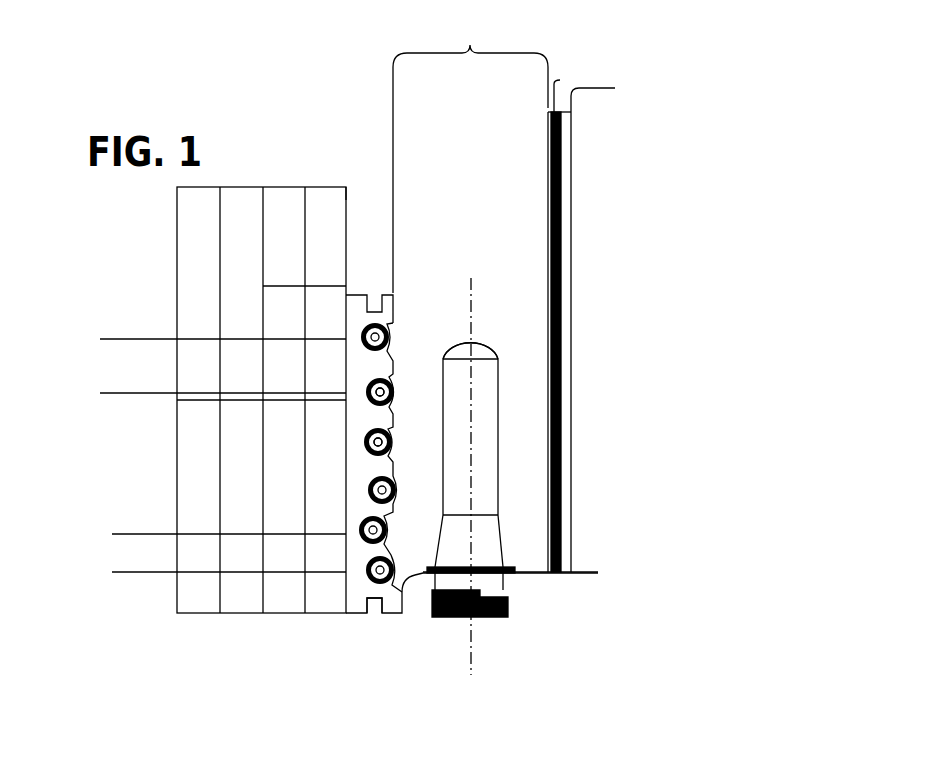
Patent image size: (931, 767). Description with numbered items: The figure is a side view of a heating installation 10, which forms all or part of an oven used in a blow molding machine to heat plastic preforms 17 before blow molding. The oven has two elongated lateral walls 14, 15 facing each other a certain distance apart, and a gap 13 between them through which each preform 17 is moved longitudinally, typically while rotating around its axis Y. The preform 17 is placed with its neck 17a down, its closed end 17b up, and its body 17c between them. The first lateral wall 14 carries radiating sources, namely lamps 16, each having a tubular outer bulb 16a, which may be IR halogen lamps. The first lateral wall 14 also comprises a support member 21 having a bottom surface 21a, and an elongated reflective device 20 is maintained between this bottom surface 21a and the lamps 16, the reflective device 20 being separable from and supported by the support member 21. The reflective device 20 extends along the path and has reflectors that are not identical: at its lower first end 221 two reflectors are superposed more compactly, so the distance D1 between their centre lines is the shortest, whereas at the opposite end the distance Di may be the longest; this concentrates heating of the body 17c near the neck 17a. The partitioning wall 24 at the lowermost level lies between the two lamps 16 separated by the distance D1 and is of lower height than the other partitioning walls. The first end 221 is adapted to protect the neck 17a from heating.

The heating installation 10 is at (128, 450).
The gap 13 is at (331, 305).
The first lateral wall 14 is at (321, 630).
The second lateral wall 15 is at (613, 582).
The lamps 16 is at (367, 436).
The tubular outer bulb 16a is at (390, 430).
The preform 17 is at (500, 390).
The neck 17a is at (508, 592).
The closed end 17b is at (492, 345).
The body 17c is at (502, 540).
The reflective device 20 is at (409, 286).
The support member 21 is at (195, 238).
The bottom surface 21a is at (350, 200).
The partitioning wall 24 is at (387, 547).
The first end 221 is at (392, 612).
The distance Di is at (108, 340).
The distance D1 is at (119, 500).
The preform axis Y is at (478, 297).